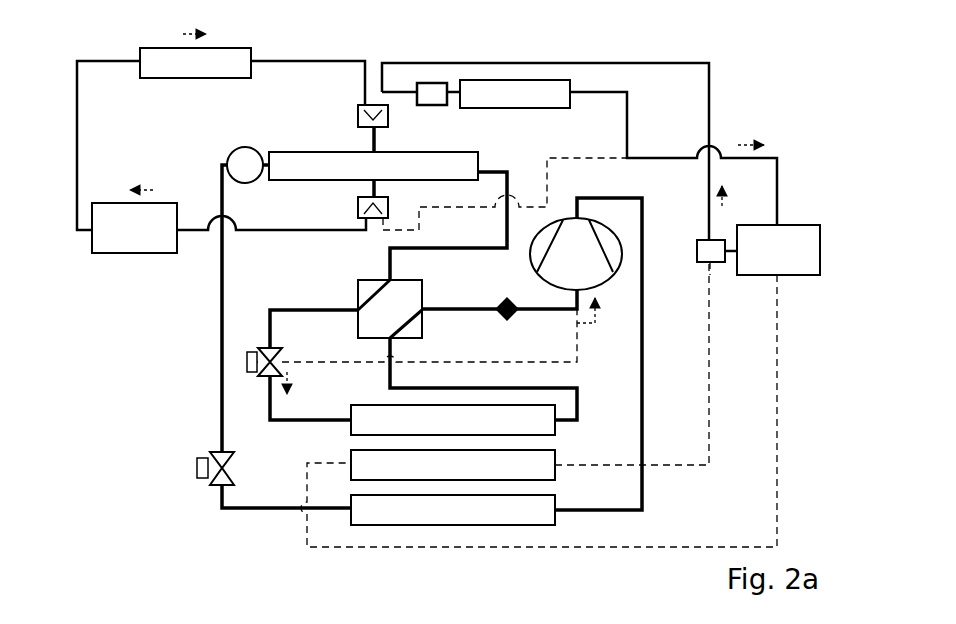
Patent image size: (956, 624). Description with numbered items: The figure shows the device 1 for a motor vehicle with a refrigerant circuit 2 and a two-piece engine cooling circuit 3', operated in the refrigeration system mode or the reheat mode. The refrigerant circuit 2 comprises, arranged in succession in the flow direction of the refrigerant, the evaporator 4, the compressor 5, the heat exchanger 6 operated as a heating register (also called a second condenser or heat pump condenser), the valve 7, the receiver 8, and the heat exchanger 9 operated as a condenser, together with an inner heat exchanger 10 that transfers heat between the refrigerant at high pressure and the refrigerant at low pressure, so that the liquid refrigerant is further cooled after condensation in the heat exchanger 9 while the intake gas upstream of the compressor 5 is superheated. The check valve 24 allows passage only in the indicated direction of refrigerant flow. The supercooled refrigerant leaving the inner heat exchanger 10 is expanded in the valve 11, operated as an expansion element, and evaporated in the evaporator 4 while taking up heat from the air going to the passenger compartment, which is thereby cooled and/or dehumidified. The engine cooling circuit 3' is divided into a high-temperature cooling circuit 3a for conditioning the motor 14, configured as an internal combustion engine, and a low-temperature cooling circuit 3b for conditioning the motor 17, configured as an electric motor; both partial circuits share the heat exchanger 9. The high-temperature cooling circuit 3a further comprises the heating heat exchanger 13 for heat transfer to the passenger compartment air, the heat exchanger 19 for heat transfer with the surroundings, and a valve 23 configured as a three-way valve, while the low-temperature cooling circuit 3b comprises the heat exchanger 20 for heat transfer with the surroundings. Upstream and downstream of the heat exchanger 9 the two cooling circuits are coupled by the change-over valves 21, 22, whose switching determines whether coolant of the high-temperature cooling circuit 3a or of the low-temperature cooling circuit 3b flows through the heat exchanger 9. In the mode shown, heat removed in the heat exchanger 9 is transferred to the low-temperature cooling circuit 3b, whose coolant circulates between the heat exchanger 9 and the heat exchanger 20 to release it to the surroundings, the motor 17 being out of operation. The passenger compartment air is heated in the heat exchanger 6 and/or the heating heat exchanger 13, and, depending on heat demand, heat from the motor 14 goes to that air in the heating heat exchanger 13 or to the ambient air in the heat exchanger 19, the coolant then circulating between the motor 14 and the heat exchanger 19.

The device 1 is at (789, 106).
The refrigerant circuit 2 is at (231, 521).
The engine cooling circuit 3' is at (579, 117).
The high-temperature cooling circuit 3a is at (656, 53).
The low-temperature cooling circuit 3b is at (96, 104).
The evaporator 4 is at (445, 431).
The compressor 5 is at (598, 280).
The heat exchanger 6 is at (445, 521).
The valve 7 is at (198, 460).
The receiver 8 is at (251, 160).
The heat exchanger 9 is at (367, 177).
The inner heat exchanger 10 is at (423, 290).
The valve 11 is at (251, 352).
The heating heat exchanger 13 is at (440, 476).
The motor 14 is at (766, 261).
The motor 17 is at (122, 239).
The heat exchanger 19 is at (504, 105).
The heat exchanger 20 is at (184, 74).
The change-over valve 21 is at (358, 110).
The change-over valve 22 is at (358, 205).
The valve 23 is at (712, 249).
The check valve 24 is at (516, 318).